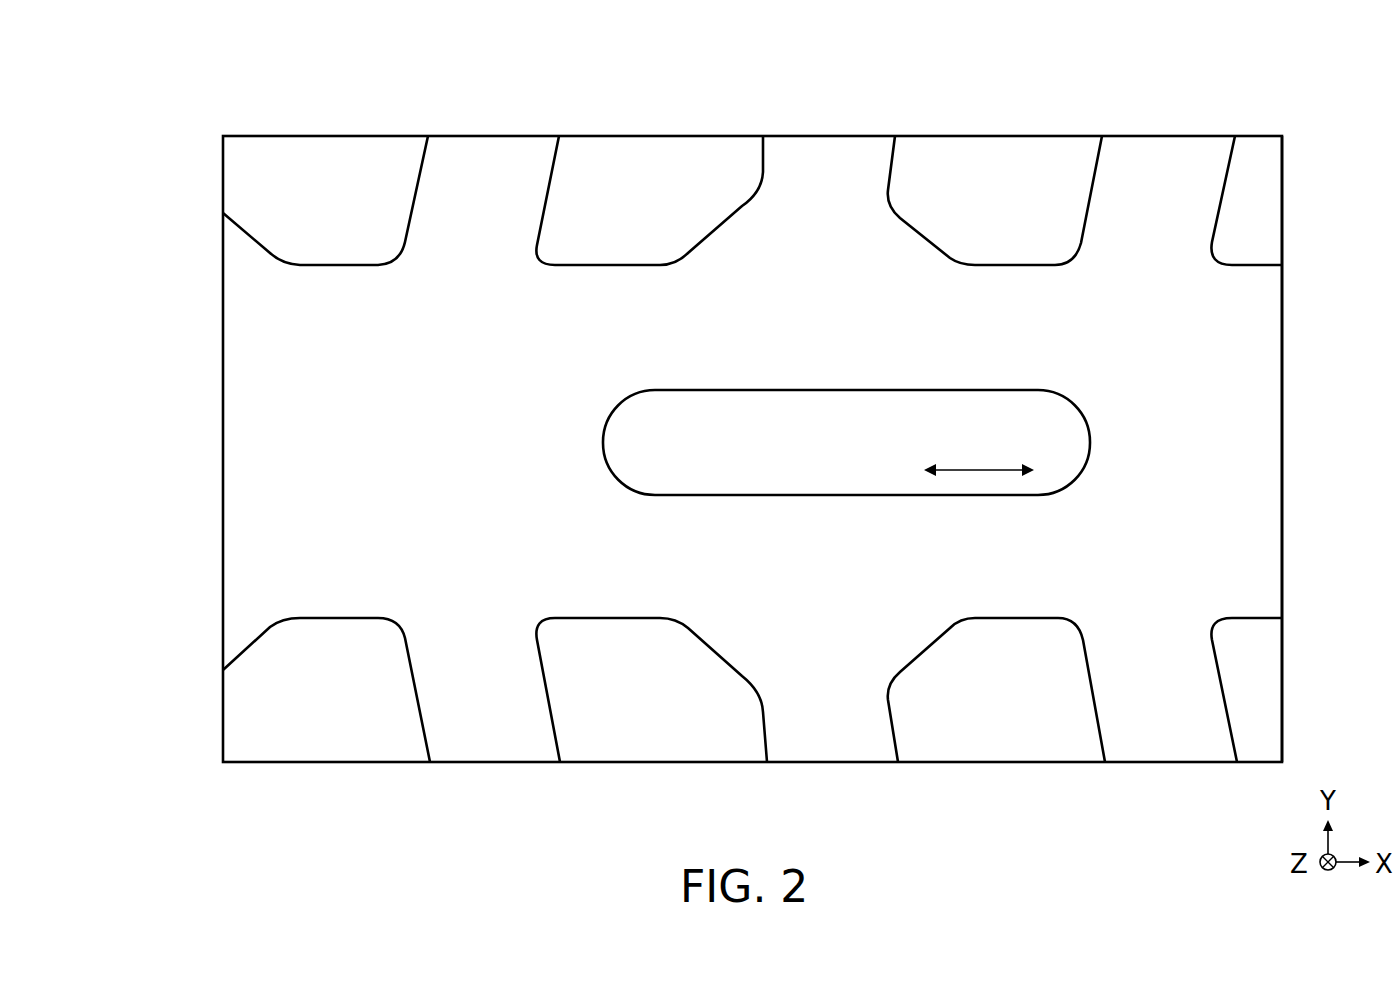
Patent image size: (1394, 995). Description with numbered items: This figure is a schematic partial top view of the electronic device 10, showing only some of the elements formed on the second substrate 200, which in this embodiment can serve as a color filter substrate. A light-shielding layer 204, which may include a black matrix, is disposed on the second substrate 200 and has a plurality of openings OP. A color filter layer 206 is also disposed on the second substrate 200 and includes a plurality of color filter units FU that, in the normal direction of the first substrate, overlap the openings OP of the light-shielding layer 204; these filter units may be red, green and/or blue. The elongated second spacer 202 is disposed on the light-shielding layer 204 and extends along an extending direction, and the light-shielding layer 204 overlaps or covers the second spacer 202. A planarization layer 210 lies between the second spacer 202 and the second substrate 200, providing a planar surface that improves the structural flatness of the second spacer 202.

The electronic device 10 is at (108, 51).
The second substrate 200 is at (206, 128).
The second spacer 202 is at (1062, 441).
The light-shielding layer 204 is at (762, 158).
The color filter layer 206 is at (650, 157).
The planarization layer 210 is at (1283, 380).